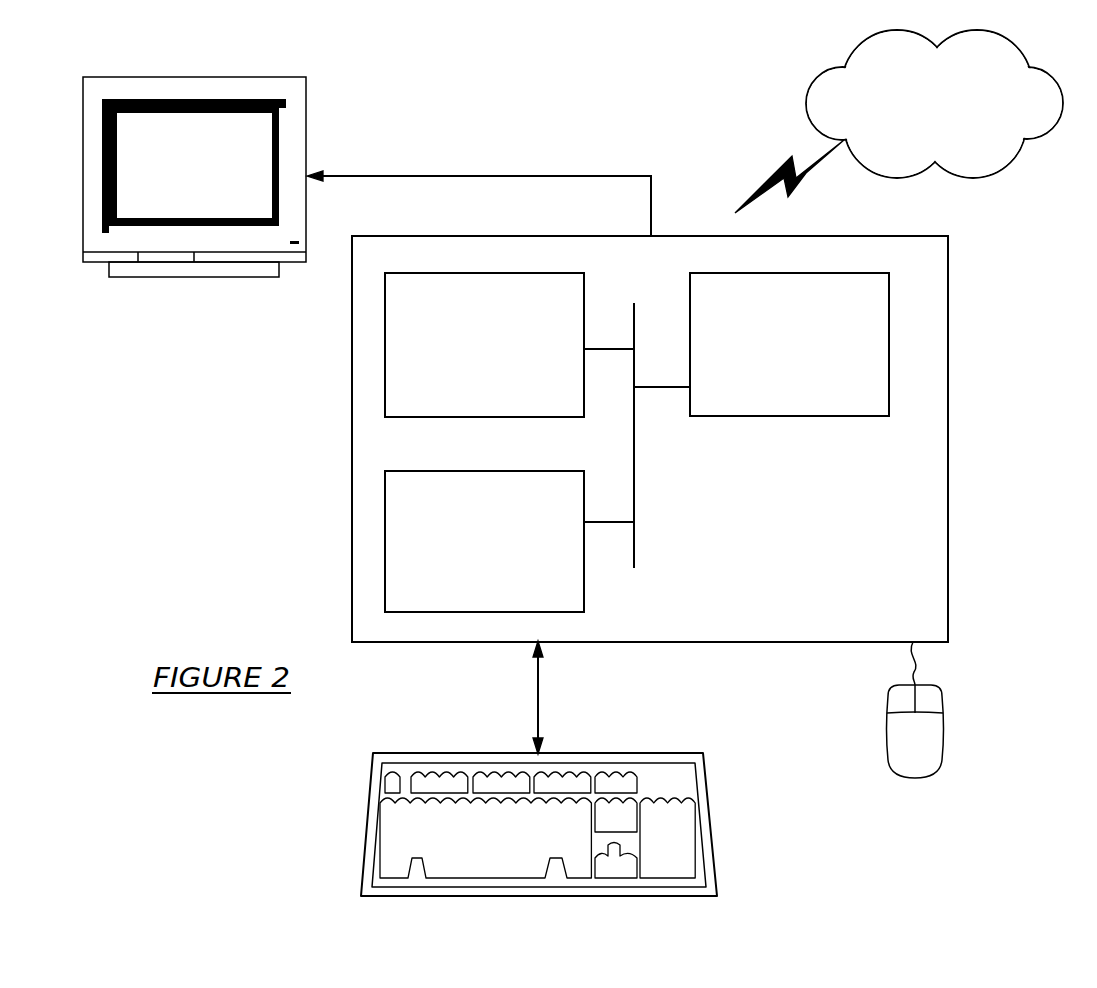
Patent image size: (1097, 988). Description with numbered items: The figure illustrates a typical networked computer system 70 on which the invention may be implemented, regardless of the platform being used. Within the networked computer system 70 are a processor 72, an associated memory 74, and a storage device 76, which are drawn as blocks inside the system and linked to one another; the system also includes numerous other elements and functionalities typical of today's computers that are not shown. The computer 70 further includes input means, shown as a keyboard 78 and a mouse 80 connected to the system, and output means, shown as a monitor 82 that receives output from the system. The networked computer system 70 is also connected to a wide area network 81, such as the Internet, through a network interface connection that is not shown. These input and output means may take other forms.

The networked computer system 70 is at (966, 492).
The processor 72 is at (792, 357).
The associated memory 74 is at (470, 358).
The storage device 76 is at (468, 553).
The keyboard 78 is at (453, 847).
The mouse 80 is at (900, 753).
The wide area network 81 is at (924, 137).
The monitor 82 is at (178, 184).